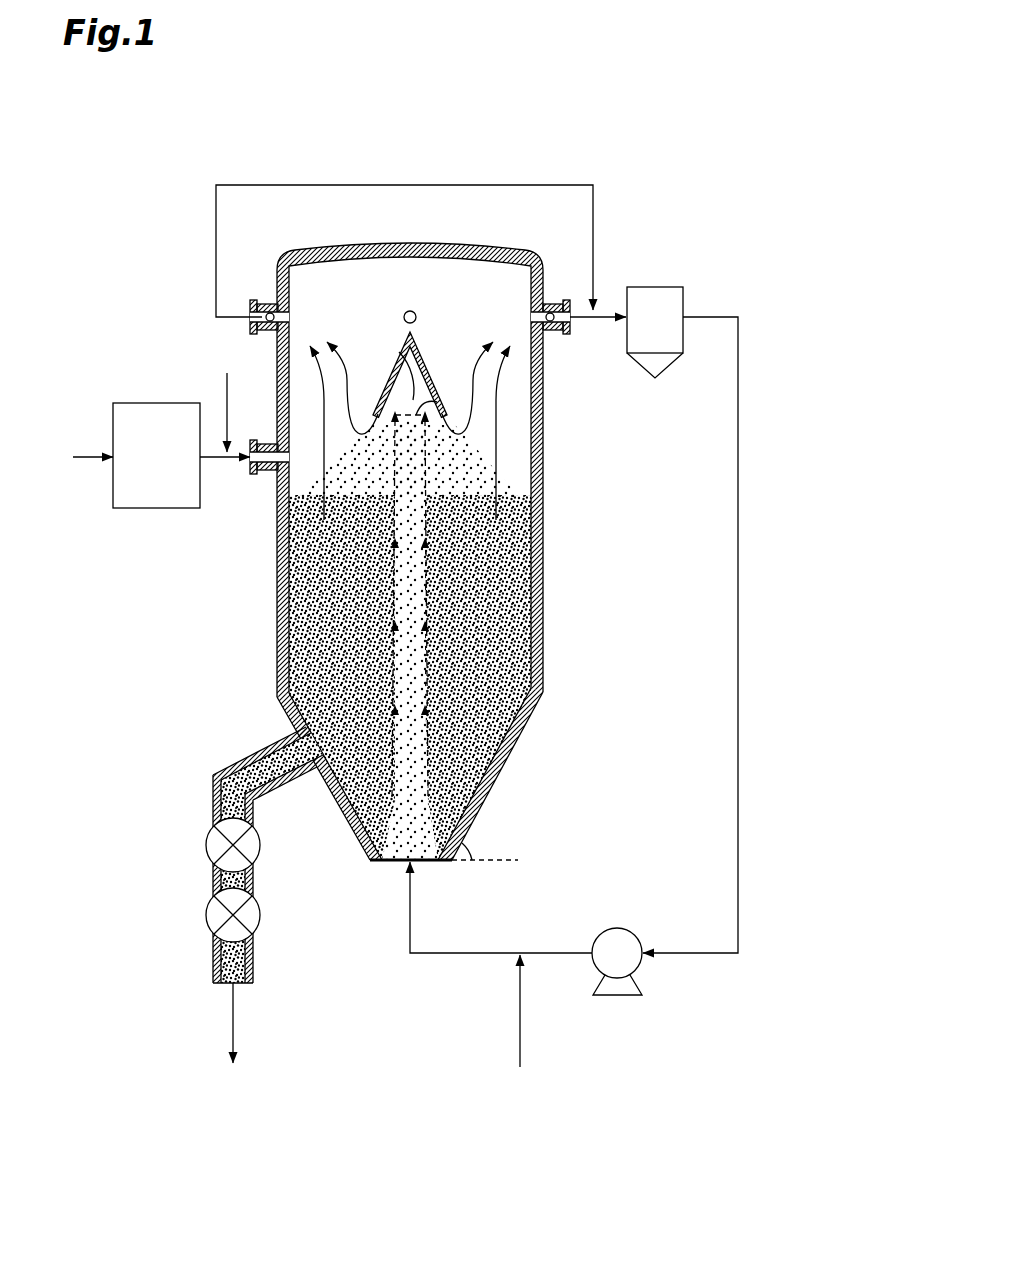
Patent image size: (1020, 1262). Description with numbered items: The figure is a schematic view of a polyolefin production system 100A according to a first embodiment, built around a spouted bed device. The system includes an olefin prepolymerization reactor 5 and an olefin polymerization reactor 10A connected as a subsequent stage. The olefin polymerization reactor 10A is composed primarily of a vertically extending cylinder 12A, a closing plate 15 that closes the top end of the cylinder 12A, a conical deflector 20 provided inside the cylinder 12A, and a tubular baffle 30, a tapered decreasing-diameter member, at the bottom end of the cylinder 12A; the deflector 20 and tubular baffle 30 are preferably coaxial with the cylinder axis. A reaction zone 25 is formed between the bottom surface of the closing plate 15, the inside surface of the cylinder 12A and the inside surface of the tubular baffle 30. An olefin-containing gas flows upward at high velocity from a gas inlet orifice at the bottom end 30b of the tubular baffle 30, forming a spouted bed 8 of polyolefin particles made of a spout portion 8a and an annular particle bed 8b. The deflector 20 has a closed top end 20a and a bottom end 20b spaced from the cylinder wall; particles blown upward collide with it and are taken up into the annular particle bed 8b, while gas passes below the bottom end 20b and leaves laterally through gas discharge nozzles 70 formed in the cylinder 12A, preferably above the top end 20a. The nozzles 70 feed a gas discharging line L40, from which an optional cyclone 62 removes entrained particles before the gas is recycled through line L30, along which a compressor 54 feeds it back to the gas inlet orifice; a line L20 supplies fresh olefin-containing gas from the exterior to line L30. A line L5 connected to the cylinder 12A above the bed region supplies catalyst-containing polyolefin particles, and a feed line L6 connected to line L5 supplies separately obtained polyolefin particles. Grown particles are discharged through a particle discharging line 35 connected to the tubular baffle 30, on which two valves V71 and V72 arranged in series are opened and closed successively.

The polyolefin production system 100A is at (668, 116).
The olefin polymerization reactor 10A is at (402, 163).
The closing plate 15 is at (497, 244).
The cylinder 12A is at (545, 578).
The reaction zone 25 is at (517, 435).
The deflector 20 is at (403, 356).
The top end of deflector 20a is at (403, 325).
The bottom end of deflector 20b is at (452, 413).
The gas discharge nozzles 70 is at (410, 311).
The spouted bed 8 is at (463, 640).
The spout portion 8a is at (521, 732).
The annular particle bed 8b is at (532, 684).
The tubular baffle 30 is at (498, 777).
The bottom end of tubular baffle 30b is at (443, 862).
The particle discharging line 35 is at (223, 880).
The valve V71 is at (207, 845).
The valve V72 is at (207, 915).
The olefin prepolymerization reactor 5 is at (145, 403).
The line L5 is at (215, 460).
The feed line L6 is at (225, 393).
The gas discharging line L40 is at (527, 185).
The cyclone 62 is at (660, 287).
The line L30 is at (720, 317).
The compressor 54 is at (618, 928).
The line L20 is at (520, 1022).